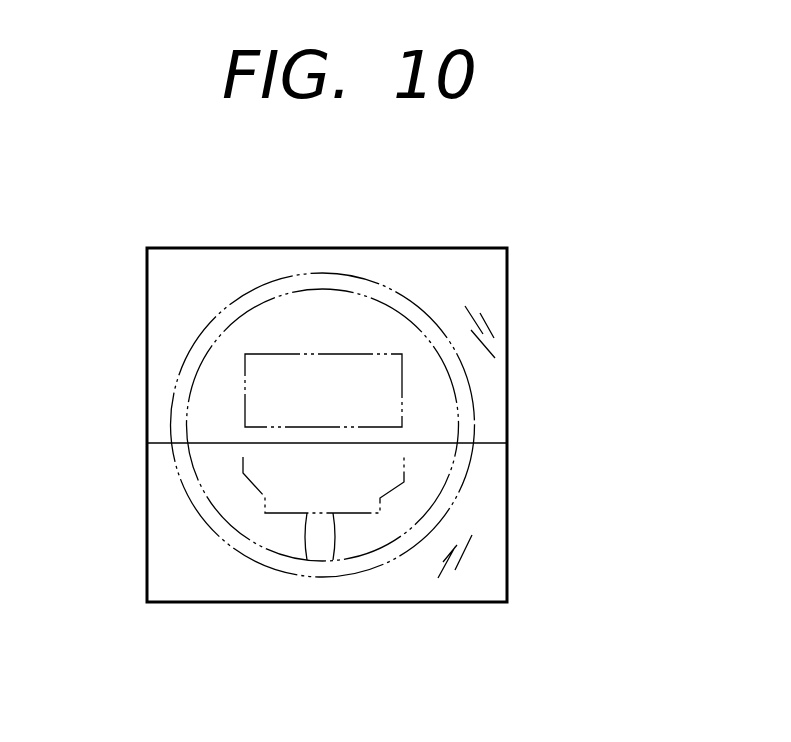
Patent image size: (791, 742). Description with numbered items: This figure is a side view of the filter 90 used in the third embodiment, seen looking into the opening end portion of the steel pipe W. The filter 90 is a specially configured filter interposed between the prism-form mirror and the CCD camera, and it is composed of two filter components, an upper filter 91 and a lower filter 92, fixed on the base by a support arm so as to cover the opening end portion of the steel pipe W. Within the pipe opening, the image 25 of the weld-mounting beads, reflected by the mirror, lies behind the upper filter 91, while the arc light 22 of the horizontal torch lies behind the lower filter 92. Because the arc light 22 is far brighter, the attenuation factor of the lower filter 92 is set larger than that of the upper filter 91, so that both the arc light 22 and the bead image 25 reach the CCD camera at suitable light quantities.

The steel pipe W is at (187, 355).
The image of the weld-mounting beads 25 is at (405, 367).
The arc light 22 is at (333, 533).
The filter 90 is at (412, 425).
The upper filter 91 is at (507, 355).
The lower filter 92 is at (385, 522).